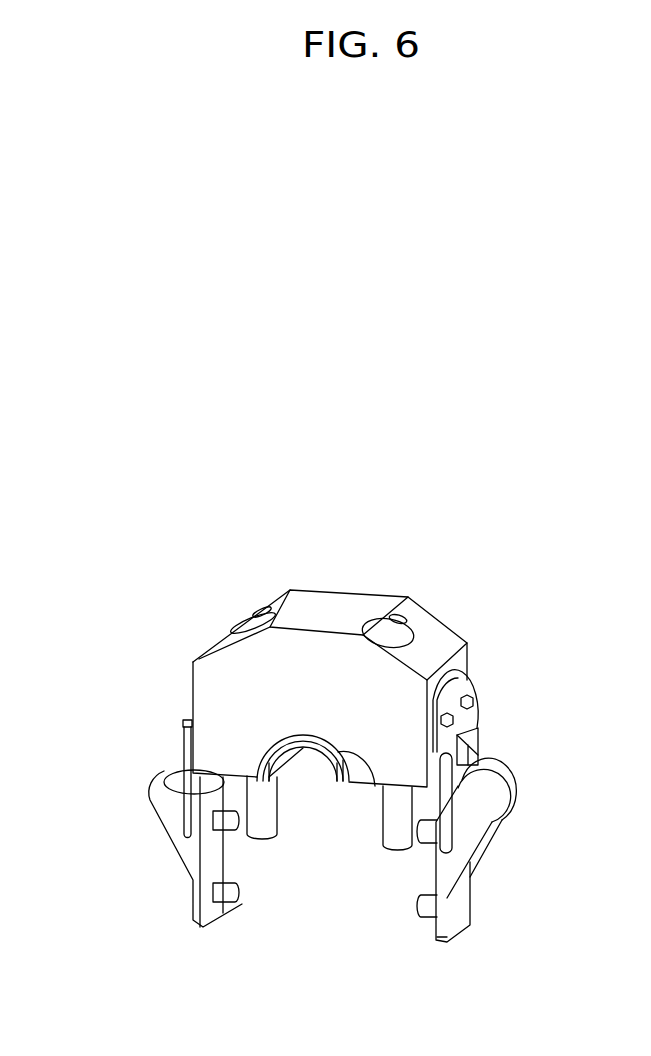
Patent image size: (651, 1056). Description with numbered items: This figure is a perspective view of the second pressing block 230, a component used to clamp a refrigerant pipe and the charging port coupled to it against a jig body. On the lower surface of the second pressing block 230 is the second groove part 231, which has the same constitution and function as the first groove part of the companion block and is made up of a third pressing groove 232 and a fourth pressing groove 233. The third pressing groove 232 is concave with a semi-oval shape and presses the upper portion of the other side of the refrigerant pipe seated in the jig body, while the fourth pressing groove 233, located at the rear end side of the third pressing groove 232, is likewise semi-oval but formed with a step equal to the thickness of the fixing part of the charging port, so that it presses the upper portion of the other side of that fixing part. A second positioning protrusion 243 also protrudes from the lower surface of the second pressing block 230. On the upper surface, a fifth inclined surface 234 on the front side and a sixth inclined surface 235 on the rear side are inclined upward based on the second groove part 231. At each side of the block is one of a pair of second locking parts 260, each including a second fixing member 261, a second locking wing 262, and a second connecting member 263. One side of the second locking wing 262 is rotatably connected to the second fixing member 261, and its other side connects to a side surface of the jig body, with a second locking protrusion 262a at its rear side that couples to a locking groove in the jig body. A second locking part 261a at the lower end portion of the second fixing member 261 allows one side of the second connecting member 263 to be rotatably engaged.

The second pressing block 230 is at (230, 563).
The second groove part 231 is at (322, 849).
The third pressing groove 232 is at (302, 749).
The fourth pressing groove 233 is at (372, 757).
The fifth inclined surface 234 is at (410, 850).
The sixth inclined surface 235 is at (193, 785).
The second positioning protrusion 243 is at (260, 838).
The second locking part 260 is at (307, 875).
The second fixing member 261 is at (462, 685).
The second locking part 261a is at (475, 738).
The second locking wing 262 is at (495, 840).
The second locking protrusion 262a is at (427, 921).
The second connecting member 263 is at (473, 753).